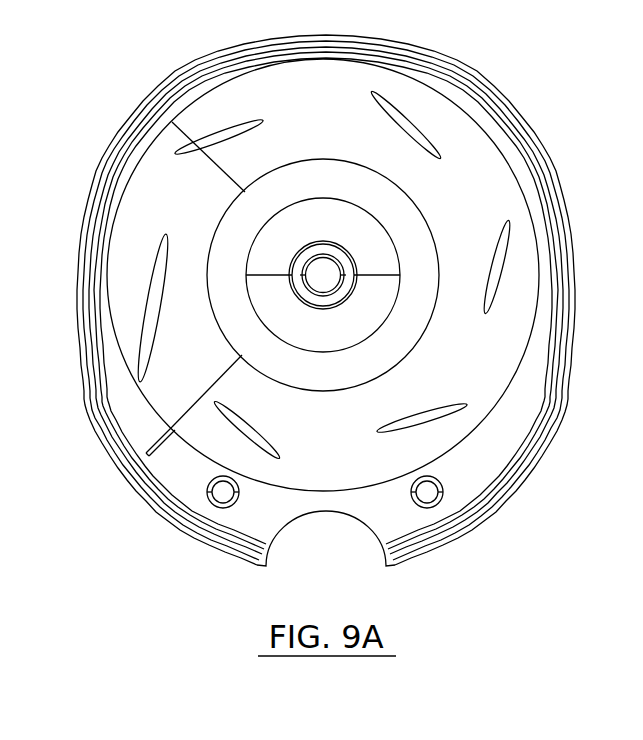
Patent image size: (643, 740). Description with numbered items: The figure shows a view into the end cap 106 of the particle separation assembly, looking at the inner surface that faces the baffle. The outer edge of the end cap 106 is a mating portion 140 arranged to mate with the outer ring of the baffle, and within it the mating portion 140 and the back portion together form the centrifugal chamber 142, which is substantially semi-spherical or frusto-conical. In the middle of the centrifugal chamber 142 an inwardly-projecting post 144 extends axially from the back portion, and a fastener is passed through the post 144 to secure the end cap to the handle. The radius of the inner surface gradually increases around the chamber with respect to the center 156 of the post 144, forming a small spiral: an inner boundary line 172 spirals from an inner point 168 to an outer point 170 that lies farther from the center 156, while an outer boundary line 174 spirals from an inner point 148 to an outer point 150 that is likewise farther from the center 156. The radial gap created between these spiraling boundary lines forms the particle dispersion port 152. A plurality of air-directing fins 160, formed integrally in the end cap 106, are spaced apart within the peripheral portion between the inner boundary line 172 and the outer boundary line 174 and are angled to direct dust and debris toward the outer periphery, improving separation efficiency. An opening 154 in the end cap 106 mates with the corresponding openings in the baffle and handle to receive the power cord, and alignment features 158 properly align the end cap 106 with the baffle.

The end cap 106 is at (91, 133).
The mating portion 140 is at (533, 138).
The centrifugal chamber 142 is at (423, 108).
The inwardly-projecting post 144 is at (318, 242).
The inner point 148 is at (172, 437).
The outer point 150 is at (170, 428).
The particle dispersion port 152 is at (155, 440).
The opening 154 is at (334, 528).
The center 156 is at (323, 280).
The alignment features 158 is at (222, 497).
The air-directing fins 160 is at (157, 308).
The inner point 168 is at (245, 360).
The outer point 170 is at (226, 365).
The inner boundary line 172 is at (430, 325).
The outer boundary line 174 is at (497, 410).